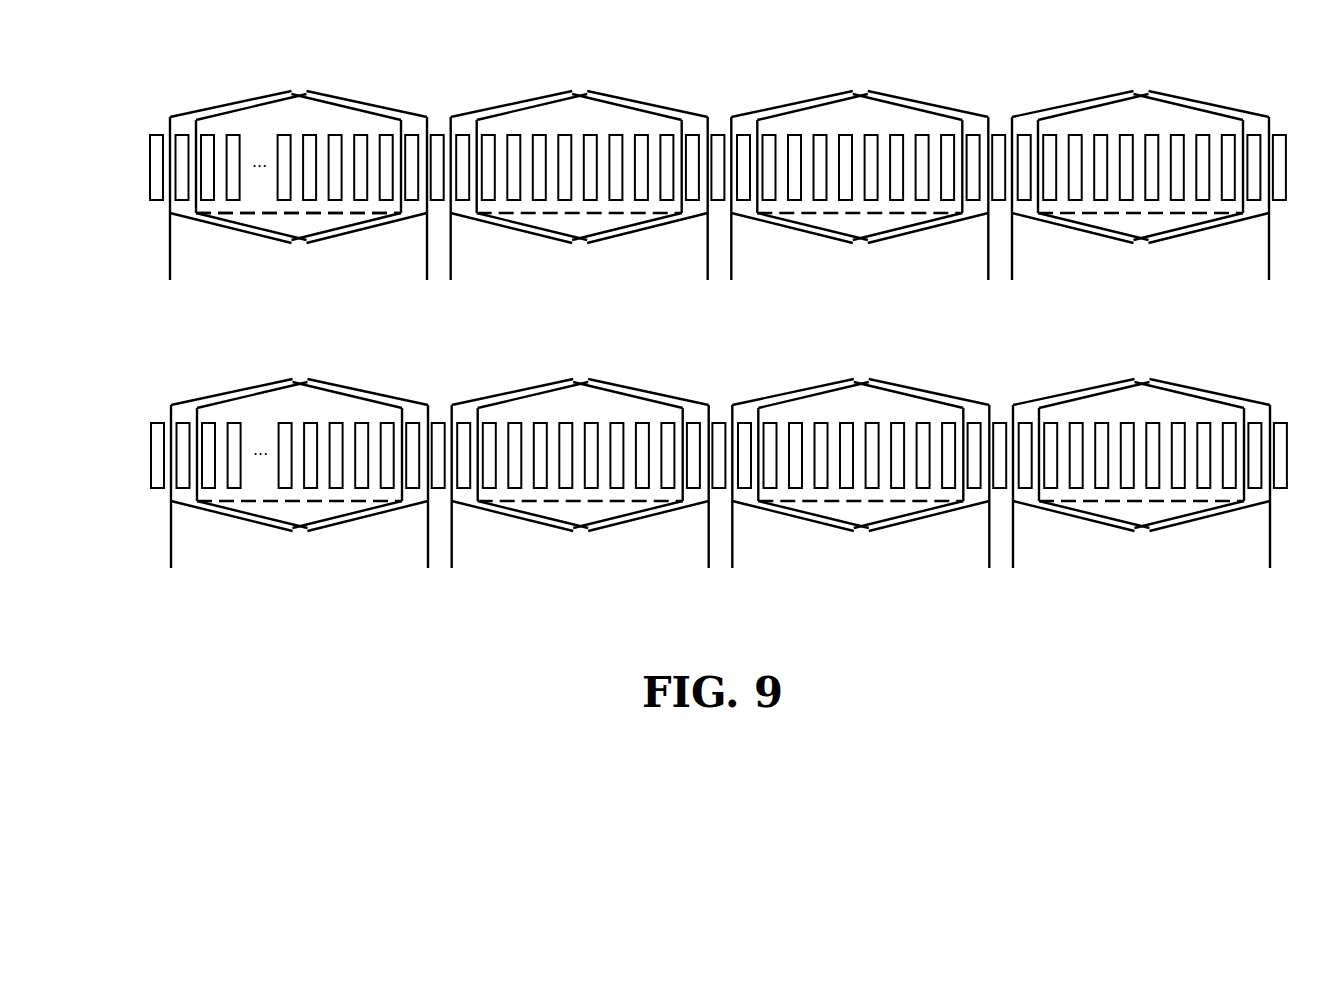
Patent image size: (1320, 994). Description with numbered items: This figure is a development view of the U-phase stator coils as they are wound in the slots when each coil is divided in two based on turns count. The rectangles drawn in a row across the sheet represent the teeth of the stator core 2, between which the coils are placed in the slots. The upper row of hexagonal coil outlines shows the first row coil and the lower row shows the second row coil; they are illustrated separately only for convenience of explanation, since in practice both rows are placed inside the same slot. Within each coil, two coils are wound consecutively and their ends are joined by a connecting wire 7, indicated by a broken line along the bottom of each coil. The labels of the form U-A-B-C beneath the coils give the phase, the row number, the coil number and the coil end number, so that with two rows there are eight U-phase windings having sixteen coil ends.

The stator core 2 is at (150, 158).
The connecting wire 7 is at (310, 214).